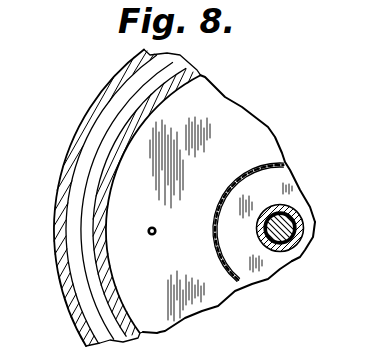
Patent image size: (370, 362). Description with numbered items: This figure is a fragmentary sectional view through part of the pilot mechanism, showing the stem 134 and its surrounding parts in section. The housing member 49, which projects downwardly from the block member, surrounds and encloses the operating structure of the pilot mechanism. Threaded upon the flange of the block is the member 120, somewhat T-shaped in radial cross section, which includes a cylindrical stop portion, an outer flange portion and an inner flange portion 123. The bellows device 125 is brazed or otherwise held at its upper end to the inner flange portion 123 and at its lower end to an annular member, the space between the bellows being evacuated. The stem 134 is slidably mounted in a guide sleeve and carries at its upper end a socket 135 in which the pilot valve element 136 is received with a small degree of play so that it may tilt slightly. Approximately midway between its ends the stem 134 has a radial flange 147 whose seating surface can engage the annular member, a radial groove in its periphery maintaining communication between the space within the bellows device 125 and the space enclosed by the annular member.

The housing member 49 is at (84, 122).
The member 120 is at (102, 173).
The inner flange portion 123 is at (127, 261).
The bellows device 125 is at (230, 277).
The stem 134 is at (291, 258).
The socket 135 is at (306, 238).
The pilot valve element 136 is at (299, 209).
The radial flange 147 is at (276, 176).